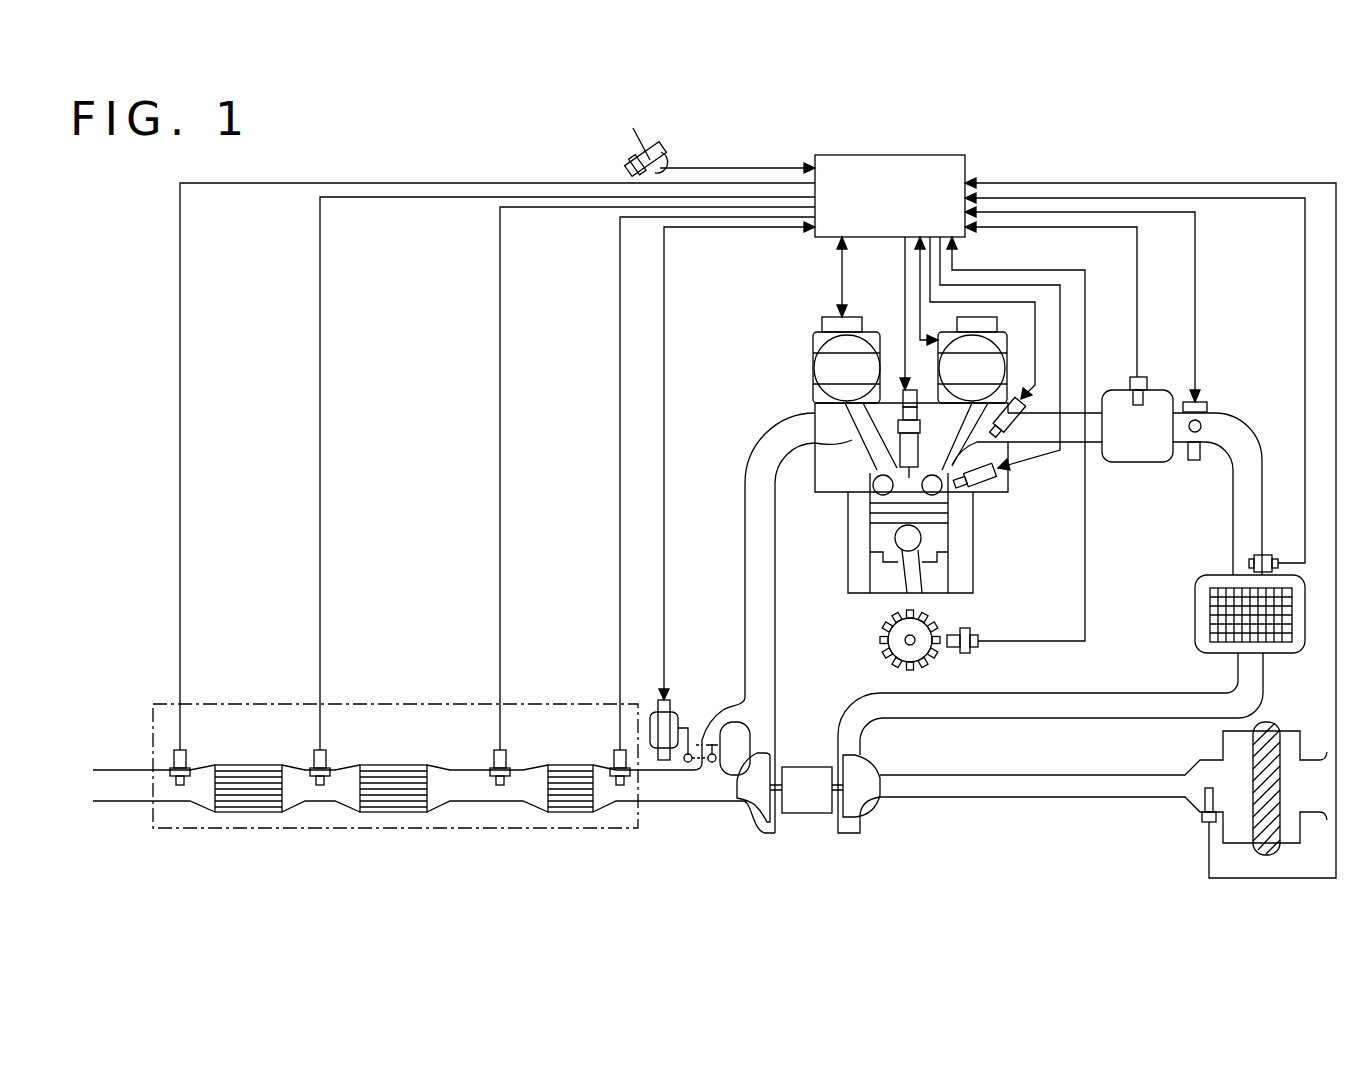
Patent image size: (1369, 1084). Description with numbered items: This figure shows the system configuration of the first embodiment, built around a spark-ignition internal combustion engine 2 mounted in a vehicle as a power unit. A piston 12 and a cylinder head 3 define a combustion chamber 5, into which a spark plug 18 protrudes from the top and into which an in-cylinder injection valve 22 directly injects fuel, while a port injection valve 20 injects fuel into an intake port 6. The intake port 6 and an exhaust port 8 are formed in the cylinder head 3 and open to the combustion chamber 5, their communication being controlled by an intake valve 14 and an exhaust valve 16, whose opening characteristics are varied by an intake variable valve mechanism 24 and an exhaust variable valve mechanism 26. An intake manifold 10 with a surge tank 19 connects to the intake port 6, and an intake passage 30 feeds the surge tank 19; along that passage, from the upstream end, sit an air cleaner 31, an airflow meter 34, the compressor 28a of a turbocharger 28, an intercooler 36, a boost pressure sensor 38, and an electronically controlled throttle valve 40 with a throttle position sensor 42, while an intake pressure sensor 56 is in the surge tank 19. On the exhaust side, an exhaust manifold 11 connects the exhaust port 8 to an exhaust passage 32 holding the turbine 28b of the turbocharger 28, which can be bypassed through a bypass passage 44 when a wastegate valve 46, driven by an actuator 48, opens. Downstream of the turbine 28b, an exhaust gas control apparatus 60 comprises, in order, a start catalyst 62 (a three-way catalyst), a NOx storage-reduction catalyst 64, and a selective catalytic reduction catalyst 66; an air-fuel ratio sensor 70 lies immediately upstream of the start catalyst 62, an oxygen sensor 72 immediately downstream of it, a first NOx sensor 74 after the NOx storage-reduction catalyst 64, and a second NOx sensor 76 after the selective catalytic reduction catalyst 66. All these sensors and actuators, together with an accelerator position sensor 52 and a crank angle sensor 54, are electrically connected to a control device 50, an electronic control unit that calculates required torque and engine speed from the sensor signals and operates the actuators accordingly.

The internal combustion engine 2 is at (934, 453).
The cylinder head 3 is at (813, 480).
The combustion chamber 5 is at (950, 545).
The intake port 6 is at (1003, 470).
The exhaust port 8 is at (850, 440).
The intake manifold 10 is at (1070, 428).
The exhaust manifold 11 is at (764, 452).
The piston 12 is at (877, 552).
The intake valve 14 is at (845, 582).
The exhaust valve 16 is at (870, 493).
The spark plug 18 is at (897, 430).
The surge tank 19 is at (1132, 462).
The port injection valve 20 is at (1040, 422).
The in-cylinder injection valve 22 is at (980, 486).
The intake variable valve mechanism 24 is at (1000, 335).
The exhaust variable valve mechanism 26 is at (815, 363).
The turbocharger 28 is at (819, 778).
The compressor 28a is at (860, 776).
The turbine 28b is at (757, 814).
The intake passage 30 is at (1260, 450).
The air cleaner 31 is at (1268, 722).
The exhaust passage 32 is at (120, 775).
The airflow meter 34 is at (1200, 820).
The intercooler 36 is at (1195, 622).
The boost pressure sensor 38 is at (1266, 553).
The throttle valve 40 is at (1208, 427).
The throttle position sensor 42 is at (1193, 462).
The bypass passage 44 is at (712, 700).
The wastegate valve 46 is at (711, 762).
The actuator 48 is at (677, 718).
The control device 50 is at (935, 155).
The accelerator position sensor 52 is at (667, 172).
The crank angle sensor 54 is at (978, 642).
The intake pressure sensor 56 is at (1153, 385).
The exhaust gas control apparatus 60 is at (394, 762).
The start catalyst 62 is at (565, 765).
The NOx storage-reduction catalyst 64 is at (398, 765).
The selective catalytic reduction catalyst 66 is at (248, 767).
The air-fuel ratio sensor 70 is at (620, 790).
The oxygen sensor 72 is at (498, 790).
The first NOx sensor 74 is at (318, 790).
The second NOx sensor 76 is at (178, 790).